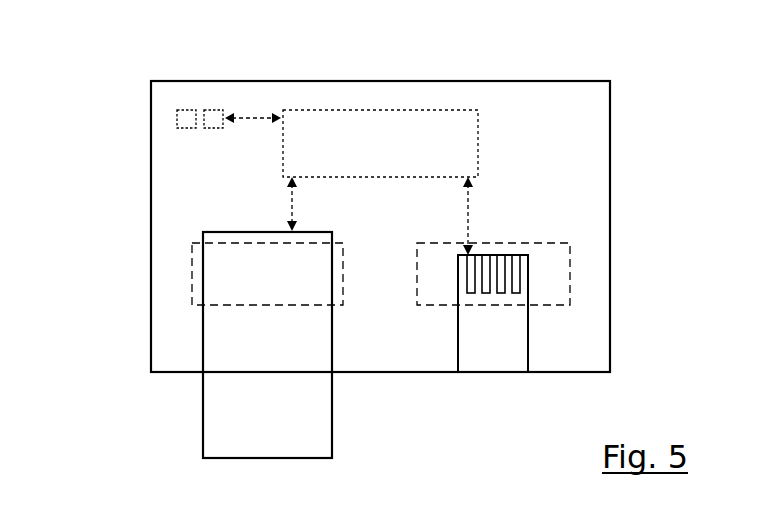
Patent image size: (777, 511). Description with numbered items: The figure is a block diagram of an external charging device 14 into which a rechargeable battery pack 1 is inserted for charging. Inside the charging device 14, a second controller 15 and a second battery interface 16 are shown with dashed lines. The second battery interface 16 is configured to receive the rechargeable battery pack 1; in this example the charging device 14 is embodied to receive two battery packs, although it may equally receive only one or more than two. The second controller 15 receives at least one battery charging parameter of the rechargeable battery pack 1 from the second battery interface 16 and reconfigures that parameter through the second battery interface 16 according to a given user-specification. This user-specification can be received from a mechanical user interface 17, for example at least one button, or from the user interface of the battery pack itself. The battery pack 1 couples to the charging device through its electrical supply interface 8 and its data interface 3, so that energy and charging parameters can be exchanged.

The external charging device 14 is at (591, 76).
The rechargeable battery pack 1 is at (218, 412).
The second controller 15 is at (398, 157).
The second battery interface 16 is at (520, 243).
The mechanical user interface 17 is at (197, 98).
The electrical supply interface 8 is at (198, 259).
The data interface 3 is at (192, 262).